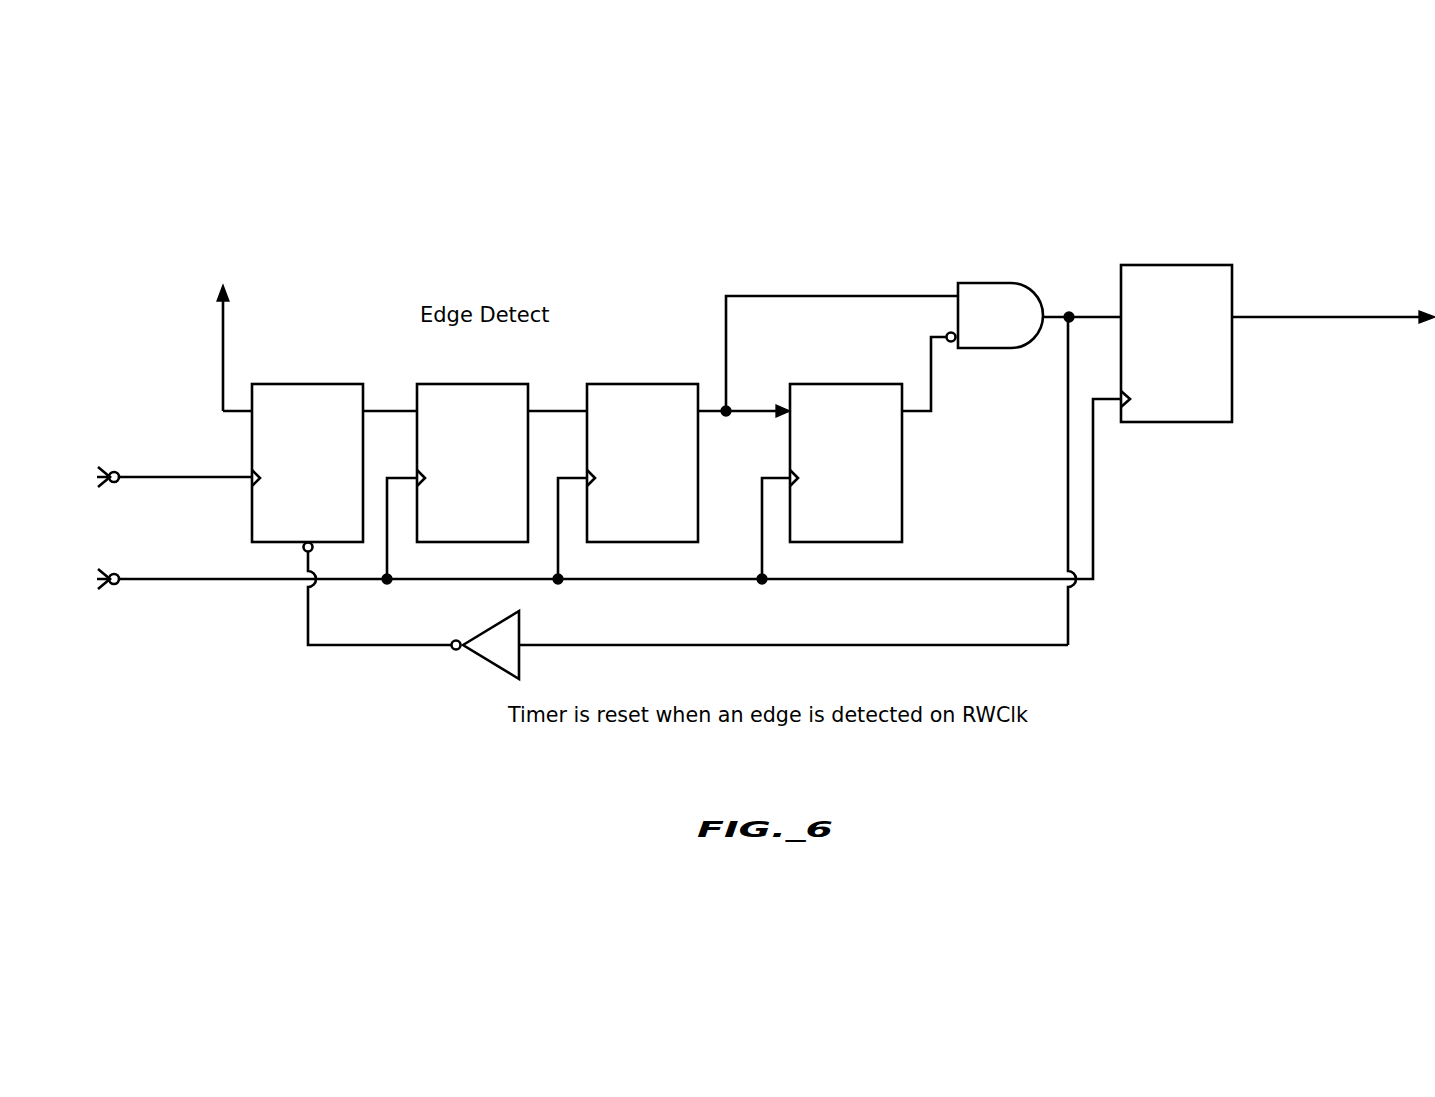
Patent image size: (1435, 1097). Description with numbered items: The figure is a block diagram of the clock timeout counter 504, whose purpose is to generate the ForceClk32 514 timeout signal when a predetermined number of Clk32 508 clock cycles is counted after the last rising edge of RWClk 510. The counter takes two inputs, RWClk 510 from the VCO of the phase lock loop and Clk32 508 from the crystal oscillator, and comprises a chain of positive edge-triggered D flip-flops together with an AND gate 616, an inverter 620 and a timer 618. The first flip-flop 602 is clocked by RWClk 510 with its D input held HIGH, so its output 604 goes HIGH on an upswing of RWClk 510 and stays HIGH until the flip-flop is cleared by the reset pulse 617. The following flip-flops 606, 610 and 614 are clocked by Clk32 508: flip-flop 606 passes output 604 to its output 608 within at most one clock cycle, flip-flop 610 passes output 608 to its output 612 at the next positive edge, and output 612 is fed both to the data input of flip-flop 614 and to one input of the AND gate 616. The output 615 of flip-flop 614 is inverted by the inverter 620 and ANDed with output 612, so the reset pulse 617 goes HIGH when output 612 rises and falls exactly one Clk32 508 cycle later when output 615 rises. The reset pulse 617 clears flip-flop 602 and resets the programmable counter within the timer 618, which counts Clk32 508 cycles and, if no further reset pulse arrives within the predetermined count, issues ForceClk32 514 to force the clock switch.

The clock timeout counter 504 is at (797, 733).
The Clk32 508 is at (158, 579).
The RWClk 510 is at (158, 477).
The ForceClk32 514 is at (1402, 316).
The positive edge-triggered D flip-flop 602 is at (277, 384).
The output 604 is at (391, 405).
The flip-flop 606 is at (470, 384).
The output 608 is at (559, 405).
The flip-flop 610 is at (640, 384).
The output 612 is at (726, 425).
The flip-flop 614 is at (817, 384).
The output 615 is at (921, 414).
The AND gate 616 is at (990, 283).
The reset pulse 617 is at (1056, 322).
The timer 618 is at (1142, 265).
The inverter 620 is at (487, 628).